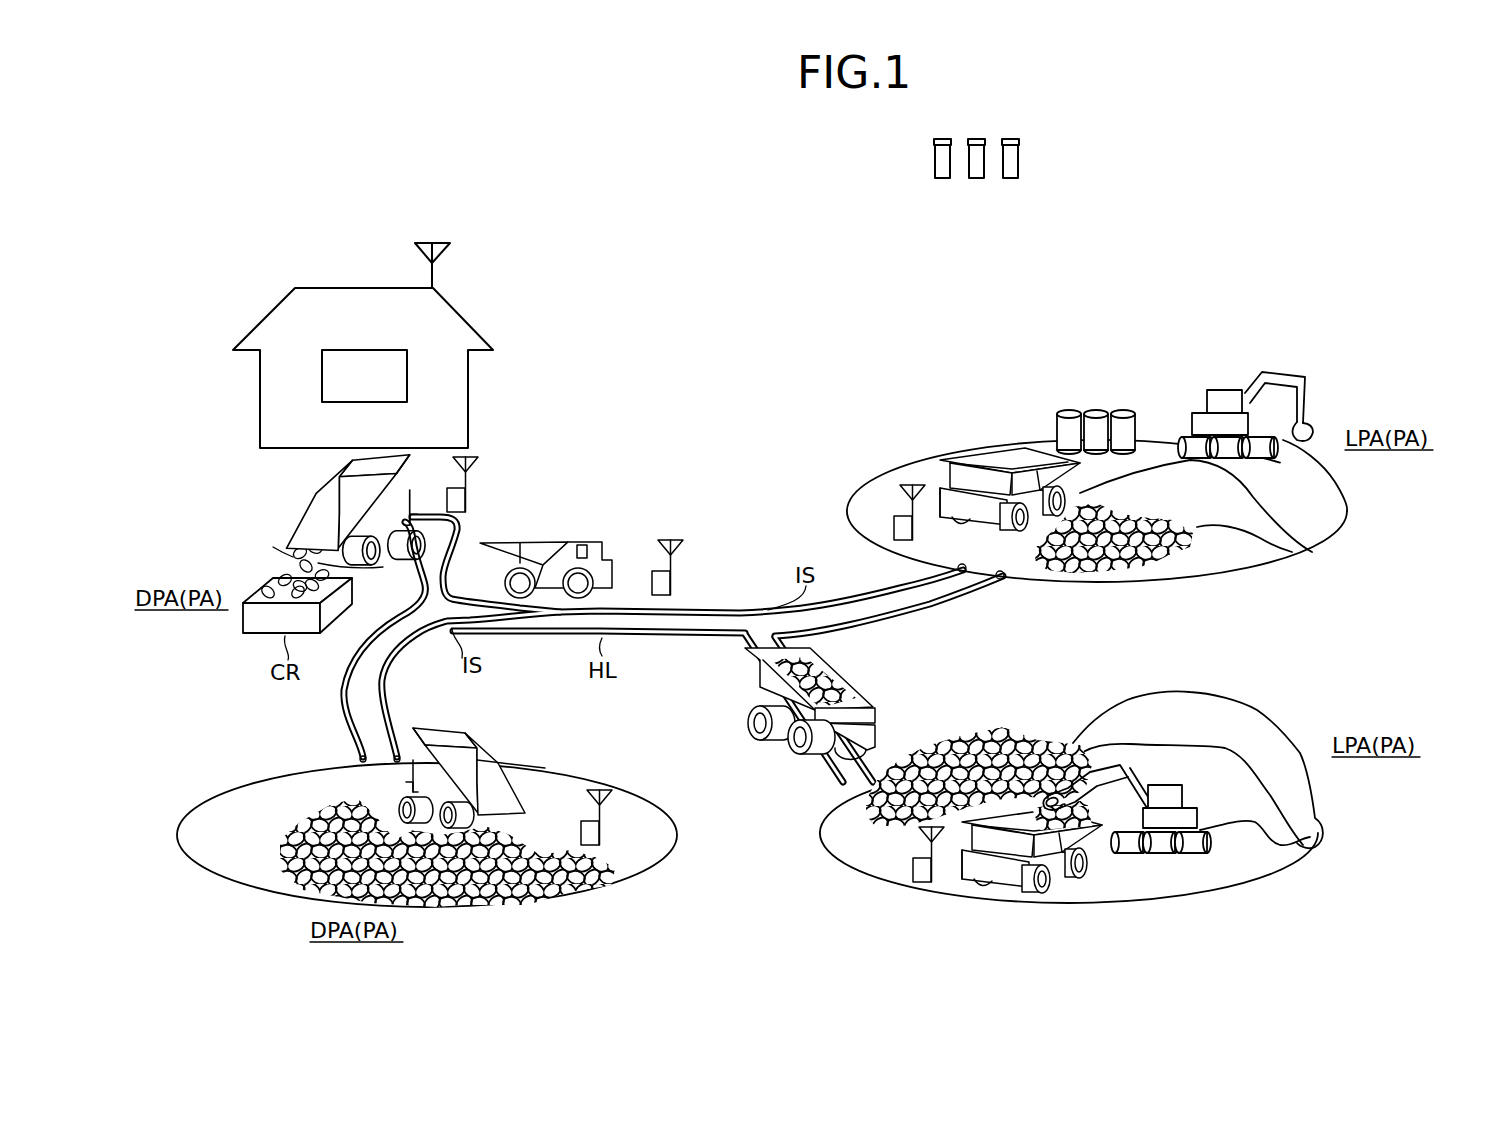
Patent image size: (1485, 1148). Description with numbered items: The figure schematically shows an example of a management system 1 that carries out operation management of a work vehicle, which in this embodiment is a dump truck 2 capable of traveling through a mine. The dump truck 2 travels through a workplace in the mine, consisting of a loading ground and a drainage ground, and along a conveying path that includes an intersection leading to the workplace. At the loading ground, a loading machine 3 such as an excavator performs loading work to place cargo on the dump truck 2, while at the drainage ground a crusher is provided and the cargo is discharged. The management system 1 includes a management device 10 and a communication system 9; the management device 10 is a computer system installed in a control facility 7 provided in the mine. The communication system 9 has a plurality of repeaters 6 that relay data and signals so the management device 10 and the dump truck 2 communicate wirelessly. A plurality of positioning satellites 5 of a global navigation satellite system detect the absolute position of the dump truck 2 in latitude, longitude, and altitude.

The management system 1 is at (1133, 237).
The dump truck 2 is at (333, 488).
The loading machine 3 is at (1222, 389).
The positioning satellites 5 is at (942, 180).
The repeaters 6 is at (467, 478).
The control facility 7 is at (341, 282).
The communication system 9 is at (691, 471).
The management device 10 is at (365, 350).